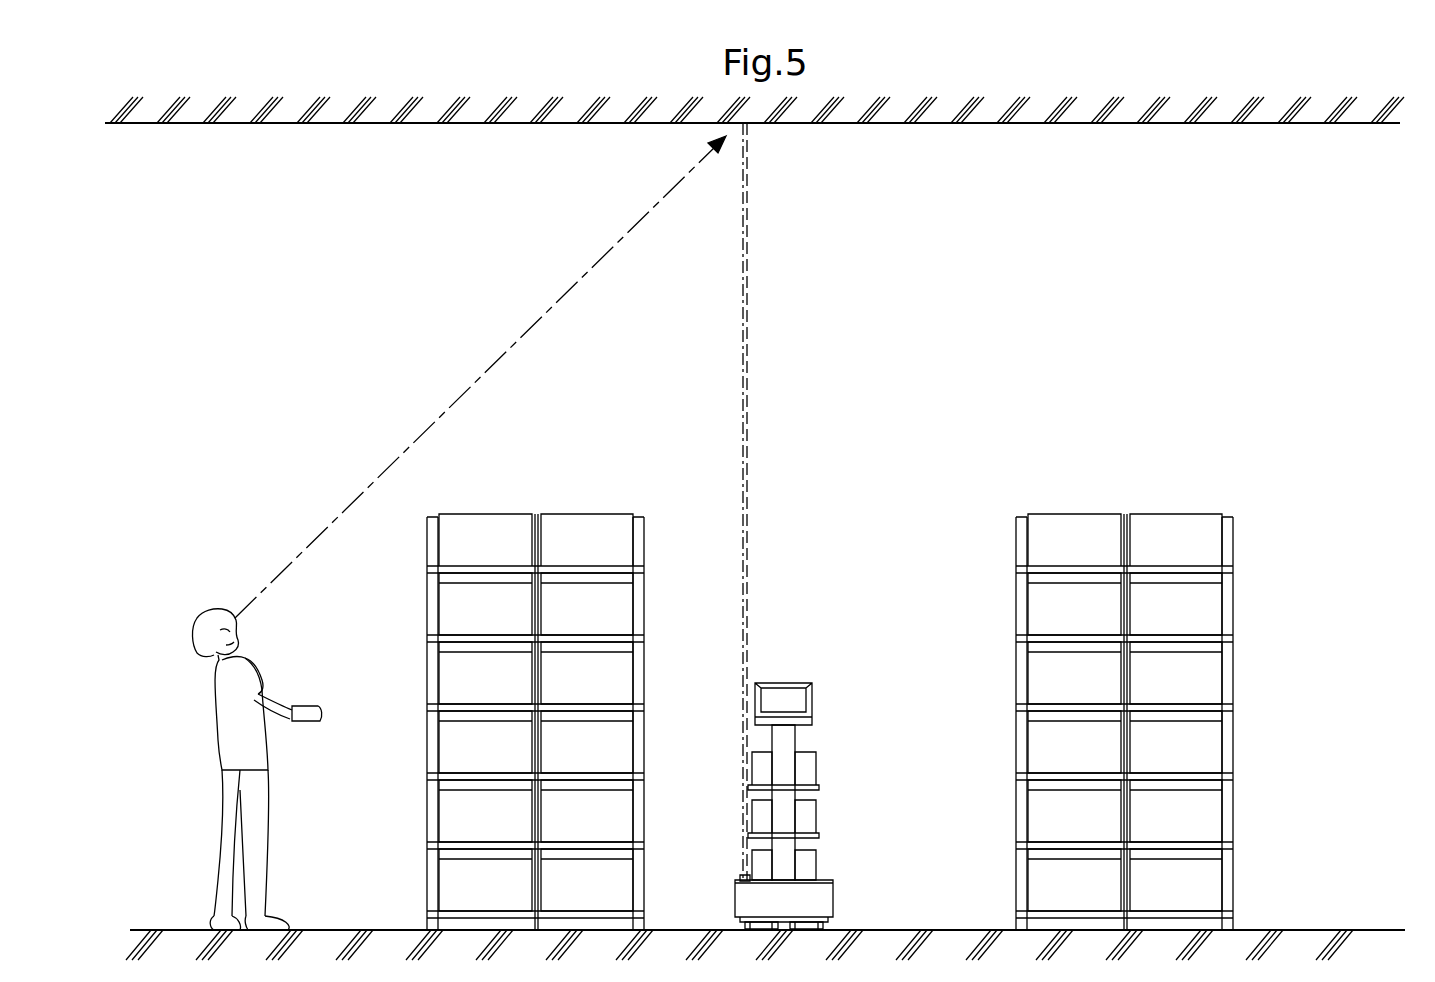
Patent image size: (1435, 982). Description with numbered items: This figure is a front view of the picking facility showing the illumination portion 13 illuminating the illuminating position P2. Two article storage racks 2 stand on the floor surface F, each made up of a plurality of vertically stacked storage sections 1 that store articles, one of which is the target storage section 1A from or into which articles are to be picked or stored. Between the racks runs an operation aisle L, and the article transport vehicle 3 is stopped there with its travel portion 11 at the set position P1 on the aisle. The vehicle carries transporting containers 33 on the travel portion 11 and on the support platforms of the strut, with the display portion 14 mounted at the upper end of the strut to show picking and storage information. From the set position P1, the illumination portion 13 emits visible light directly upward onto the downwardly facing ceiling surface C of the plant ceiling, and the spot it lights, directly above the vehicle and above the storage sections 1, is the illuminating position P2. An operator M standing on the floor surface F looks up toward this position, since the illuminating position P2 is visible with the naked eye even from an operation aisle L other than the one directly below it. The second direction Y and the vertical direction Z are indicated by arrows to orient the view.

The storage section 1 is at (468, 678).
The target storage section 1A is at (620, 606).
The article storage rack 2 is at (514, 488).
The article transport vehicle 3 is at (793, 768).
The travel portion 11 is at (746, 897).
The illumination portion 13 is at (745, 876).
The display portion 14 is at (813, 695).
The transporting container 33 is at (806, 805).
The ceiling surface C is at (922, 124).
The floor surface F is at (1303, 930).
The operation aisle L is at (278, 548).
The operator M is at (216, 702).
The set position P1 is at (841, 908).
The illuminating position P2 is at (752, 131).
The second direction Y is at (210, 197).
The vertical direction Z is at (137, 260).